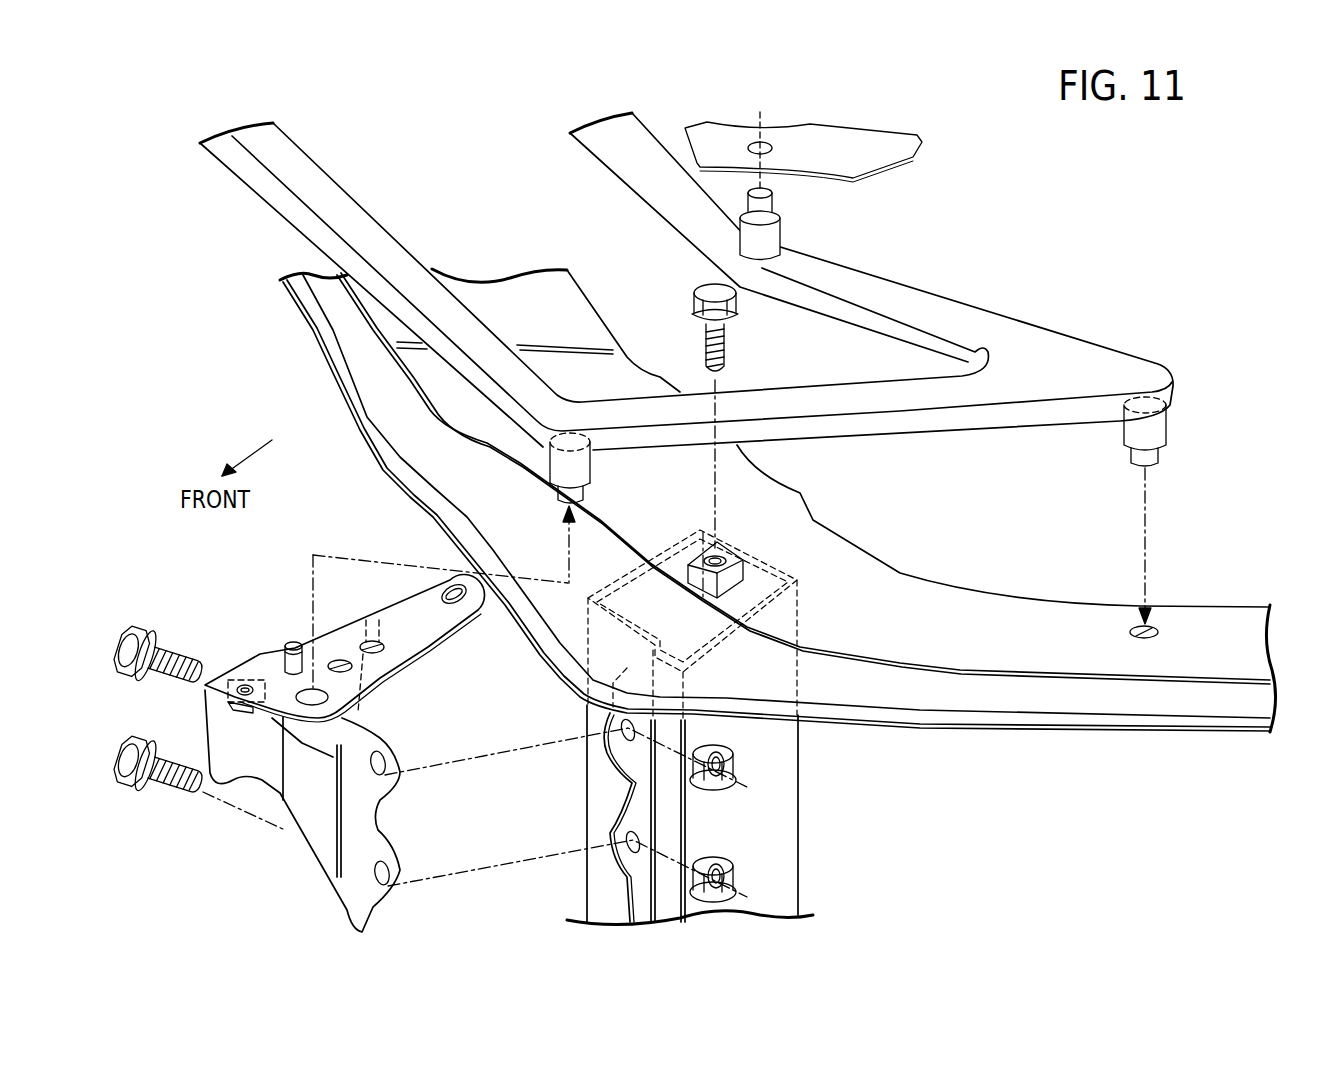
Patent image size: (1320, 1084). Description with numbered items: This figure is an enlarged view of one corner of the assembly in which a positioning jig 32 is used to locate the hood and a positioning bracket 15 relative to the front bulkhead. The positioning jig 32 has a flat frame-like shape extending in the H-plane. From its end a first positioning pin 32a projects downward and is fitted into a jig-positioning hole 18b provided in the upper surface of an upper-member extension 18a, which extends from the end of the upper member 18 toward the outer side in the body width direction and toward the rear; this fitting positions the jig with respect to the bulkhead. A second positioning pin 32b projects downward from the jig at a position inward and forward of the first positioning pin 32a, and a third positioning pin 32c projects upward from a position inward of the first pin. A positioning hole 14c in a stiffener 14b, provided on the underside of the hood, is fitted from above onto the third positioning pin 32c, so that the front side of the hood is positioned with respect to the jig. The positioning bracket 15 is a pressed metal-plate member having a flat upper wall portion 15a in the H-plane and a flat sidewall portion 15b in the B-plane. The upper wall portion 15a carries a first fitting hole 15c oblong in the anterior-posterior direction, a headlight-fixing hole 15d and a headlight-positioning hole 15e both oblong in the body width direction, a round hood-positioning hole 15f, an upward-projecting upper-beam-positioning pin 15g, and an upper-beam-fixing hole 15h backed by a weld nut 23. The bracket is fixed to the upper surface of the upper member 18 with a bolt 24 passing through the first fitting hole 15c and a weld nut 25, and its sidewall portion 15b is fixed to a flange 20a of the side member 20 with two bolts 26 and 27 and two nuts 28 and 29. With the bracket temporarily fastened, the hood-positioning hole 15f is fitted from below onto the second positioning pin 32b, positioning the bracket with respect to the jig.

The stiffener 14b is at (839, 152).
The positioning hole 14c is at (773, 148).
The positioning bracket 15 is at (386, 743).
The upper wall portion 15a is at (348, 673).
The sidewall portion 15b is at (386, 818).
The first fitting hole 15c is at (456, 600).
The headlight-fixing hole 15d is at (377, 638).
The headlight-positioning hole 15e is at (340, 660).
The hood-positioning hole 15f is at (311, 706).
The upper-beam-positioning pin 15g is at (294, 642).
The upper-beam-fixing hole 15h is at (246, 681).
The upper member 18 is at (728, 534).
The upper-member extension 18a is at (1092, 715).
The jig-positioning hole 18b is at (1149, 625).
The side member 20 is at (632, 727).
The flange 20a is at (633, 808).
The weld nut 23 is at (238, 710).
The bolt 24 is at (703, 290).
The weld nut 25 is at (737, 583).
The bolt 26 is at (168, 650).
The bolt 27 is at (173, 763).
The nut 28 is at (735, 762).
The nut 29 is at (735, 873).
The positioning jig 32 is at (268, 203).
The first positioning pin 32a is at (1157, 455).
The second positioning pin 32b is at (585, 488).
The third positioning pin 32c is at (774, 203).